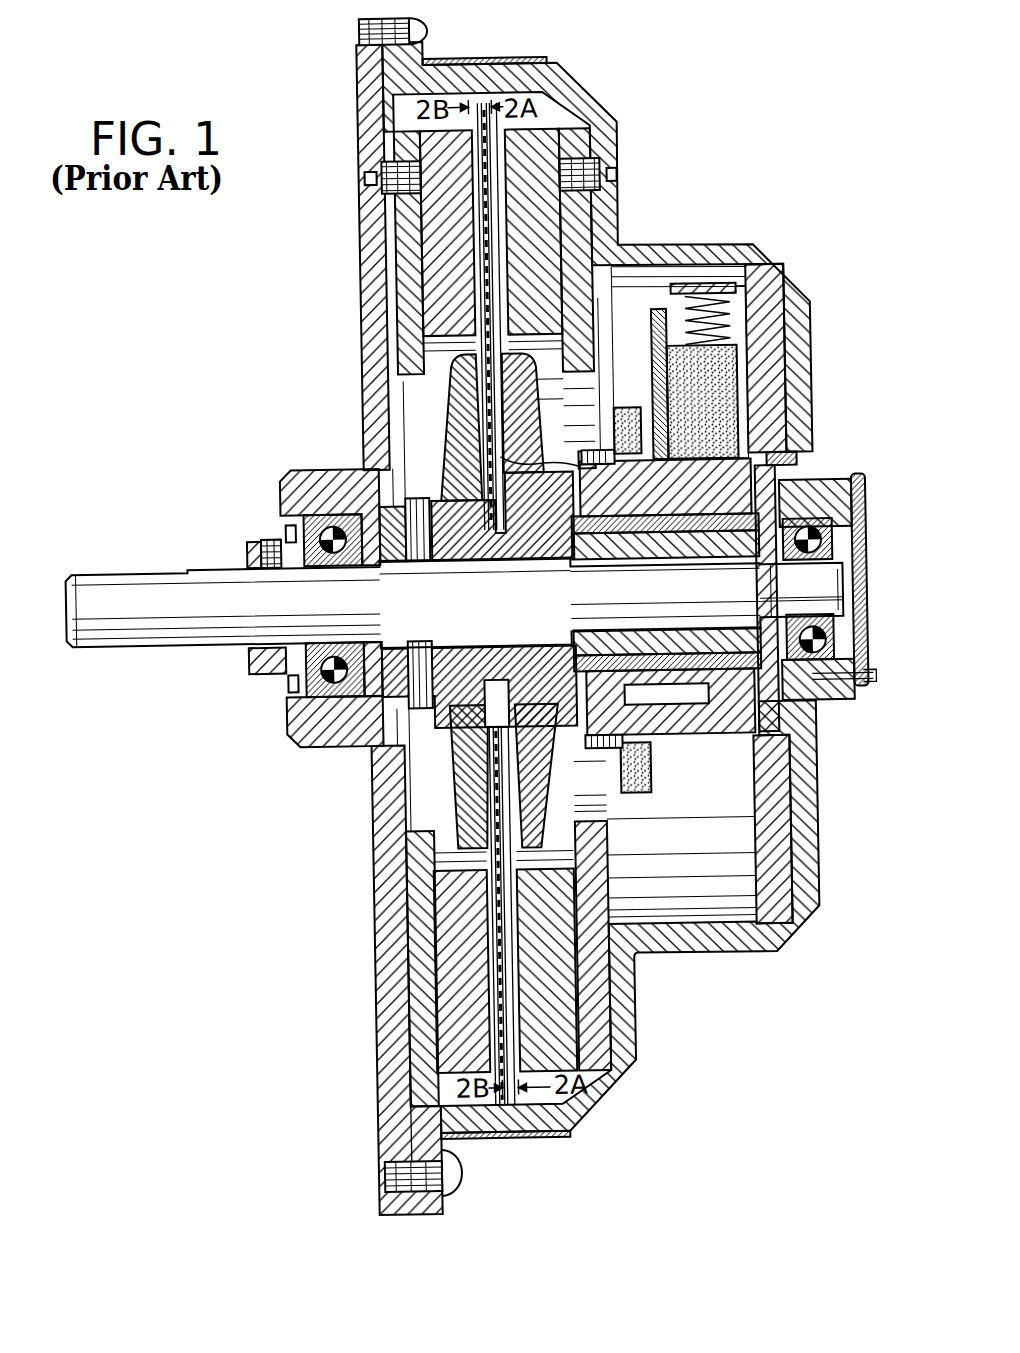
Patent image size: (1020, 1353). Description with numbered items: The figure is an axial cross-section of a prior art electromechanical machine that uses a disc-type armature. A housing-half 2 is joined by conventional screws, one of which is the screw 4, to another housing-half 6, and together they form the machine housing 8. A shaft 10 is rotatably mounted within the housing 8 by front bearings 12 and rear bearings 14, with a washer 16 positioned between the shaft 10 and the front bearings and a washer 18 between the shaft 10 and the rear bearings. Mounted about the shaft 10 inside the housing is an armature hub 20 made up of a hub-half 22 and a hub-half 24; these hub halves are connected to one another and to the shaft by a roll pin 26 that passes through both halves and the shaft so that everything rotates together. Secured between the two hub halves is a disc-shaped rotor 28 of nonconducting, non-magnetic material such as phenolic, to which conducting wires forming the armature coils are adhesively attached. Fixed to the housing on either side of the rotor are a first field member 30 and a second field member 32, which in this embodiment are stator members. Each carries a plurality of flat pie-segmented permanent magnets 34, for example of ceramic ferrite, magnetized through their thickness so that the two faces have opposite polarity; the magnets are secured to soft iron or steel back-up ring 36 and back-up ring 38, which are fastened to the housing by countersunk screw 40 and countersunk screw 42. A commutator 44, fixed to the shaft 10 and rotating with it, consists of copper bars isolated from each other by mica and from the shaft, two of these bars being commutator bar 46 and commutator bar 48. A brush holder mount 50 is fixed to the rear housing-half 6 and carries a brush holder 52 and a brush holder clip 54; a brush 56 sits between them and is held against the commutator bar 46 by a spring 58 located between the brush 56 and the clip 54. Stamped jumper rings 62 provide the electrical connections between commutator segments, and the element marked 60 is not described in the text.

The housing-half 2 is at (387, 860).
The screw 4 is at (424, 33).
The housing-half 6 is at (803, 793).
The machine housing 8 is at (707, 182).
The shaft 10 is at (130, 617).
The front bearings 12 is at (302, 700).
The rear bearings 14 is at (809, 522).
The washer 16 is at (368, 513).
The washer 18 is at (766, 566).
The armature hub 20 is at (525, 352).
The hub-half 22 is at (648, 325).
The hub-half 24 is at (456, 397).
The roll pin 26 is at (440, 722).
The disc-shaped rotor 28 is at (490, 1138).
The first field member 30 is at (416, 113).
The second field member 32 is at (510, 90).
The permanent magnets 34 is at (430, 279).
The back-up ring 36 is at (397, 154).
The back-up ring 38 is at (592, 128).
The countersunk screw 40 is at (374, 180).
The countersunk screw 42 is at (606, 167).
The commutator 44 is at (670, 751).
The commutator bar 46 is at (687, 718).
The commutator bar 48 is at (680, 500).
The brush holder mount 50 is at (783, 862).
The brush holder 52 is at (655, 312).
The brush holder clip 54 is at (752, 332).
The brush 56 is at (715, 407).
The spring 58 is at (782, 302).
The lead wire 60 is at (612, 417).
The stamped jumper rings 62 is at (627, 410).